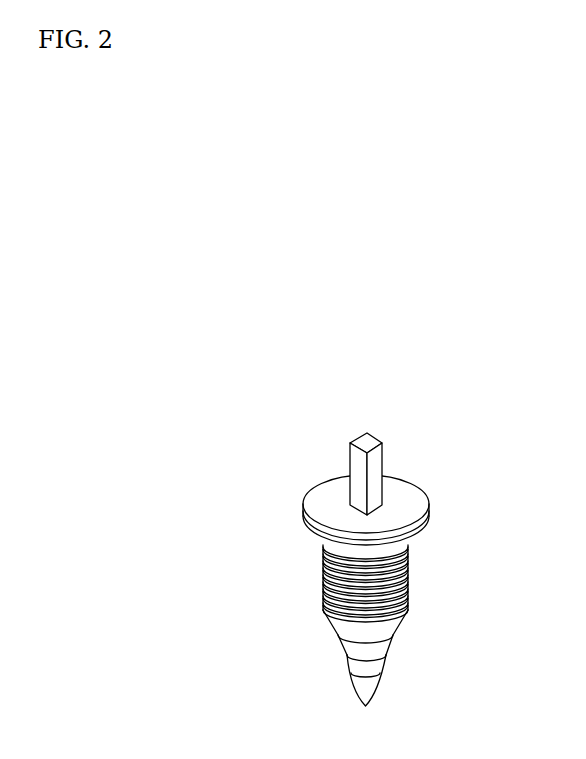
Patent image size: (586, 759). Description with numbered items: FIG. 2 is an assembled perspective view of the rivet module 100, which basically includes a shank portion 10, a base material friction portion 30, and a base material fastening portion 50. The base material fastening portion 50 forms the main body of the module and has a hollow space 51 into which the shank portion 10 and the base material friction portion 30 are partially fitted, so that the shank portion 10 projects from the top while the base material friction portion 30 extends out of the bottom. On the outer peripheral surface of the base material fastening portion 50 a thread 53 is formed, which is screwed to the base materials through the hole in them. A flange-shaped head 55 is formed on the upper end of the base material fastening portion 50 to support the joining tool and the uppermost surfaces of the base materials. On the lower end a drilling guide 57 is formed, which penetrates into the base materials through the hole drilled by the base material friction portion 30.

The rivet module 100 is at (390, 366).
The shank portion 10 is at (338, 447).
The base material fastening portion 50 is at (369, 561).
The hollow space 51 is at (349, 503).
The thread 53 is at (325, 570).
The flange-shaped head 55 is at (415, 495).
The drilling guide 57 is at (377, 658).
The base material friction portion 30 is at (400, 668).